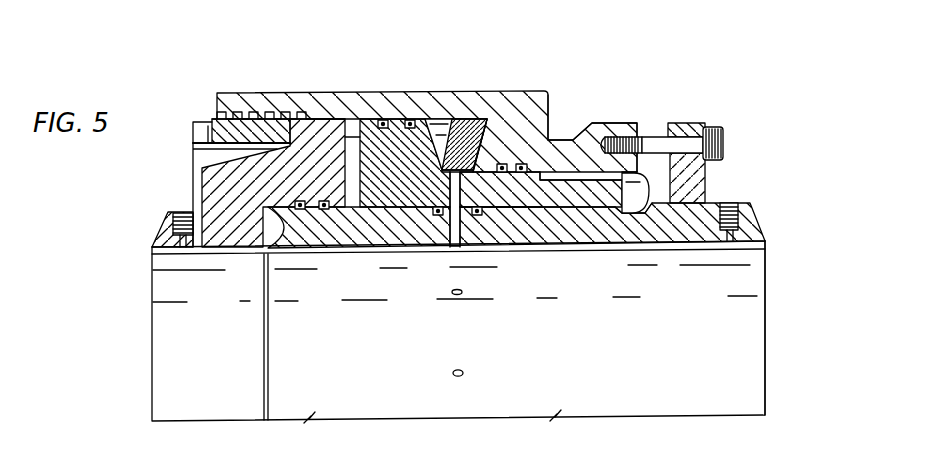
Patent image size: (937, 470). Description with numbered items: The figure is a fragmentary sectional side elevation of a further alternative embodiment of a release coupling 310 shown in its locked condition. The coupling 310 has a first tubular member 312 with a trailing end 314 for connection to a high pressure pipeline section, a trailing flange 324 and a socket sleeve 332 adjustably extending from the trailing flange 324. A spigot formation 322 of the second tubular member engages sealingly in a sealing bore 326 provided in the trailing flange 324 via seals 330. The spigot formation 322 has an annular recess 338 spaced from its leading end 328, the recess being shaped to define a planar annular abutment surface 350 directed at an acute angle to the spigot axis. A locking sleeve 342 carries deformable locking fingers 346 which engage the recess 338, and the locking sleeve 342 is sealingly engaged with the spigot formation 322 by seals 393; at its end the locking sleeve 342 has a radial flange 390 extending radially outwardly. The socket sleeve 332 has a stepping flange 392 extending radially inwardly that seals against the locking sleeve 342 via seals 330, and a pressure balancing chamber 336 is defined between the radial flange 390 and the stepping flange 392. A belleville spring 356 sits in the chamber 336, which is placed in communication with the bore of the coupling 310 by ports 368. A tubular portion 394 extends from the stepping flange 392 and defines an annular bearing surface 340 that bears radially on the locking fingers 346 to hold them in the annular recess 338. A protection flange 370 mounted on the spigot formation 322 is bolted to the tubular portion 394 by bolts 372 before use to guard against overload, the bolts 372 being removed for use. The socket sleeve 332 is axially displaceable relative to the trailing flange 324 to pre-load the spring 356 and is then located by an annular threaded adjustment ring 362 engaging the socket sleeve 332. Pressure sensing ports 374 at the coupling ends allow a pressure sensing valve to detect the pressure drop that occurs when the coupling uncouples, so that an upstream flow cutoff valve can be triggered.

The release coupling 310 is at (756, 80).
The first tubular member 312 is at (143, 335).
The trailing end 314 is at (152, 248).
The spigot formation 322 is at (781, 320).
The trailing flange 324 is at (311, 140).
The sealing bore 326 is at (260, 251).
The leading end 328 is at (297, 249).
The seals 330 is at (383, 119).
The socket sleeve 332 is at (336, 95).
The pressure balancing chamber 336 is at (455, 125).
The annular recess 338 is at (658, 213).
The annular bearing surface 340 is at (597, 190).
The locking sleeve 342 is at (508, 218).
The deformable locking fingers 346 is at (577, 210).
The annular abutment surface 350 is at (636, 222).
The belleville spring 356 is at (498, 125).
The annular threaded adjustment ring 362 is at (183, 145).
The ports 368 is at (463, 373).
The protection flange 370 is at (693, 188).
The bolts 372 is at (724, 146).
The pressure sensing ports 374 is at (732, 204).
The radial flange 390 is at (440, 119).
The stepping flange 392 is at (560, 130).
The seals 393 is at (455, 220).
The tubular portion 394 is at (578, 137).